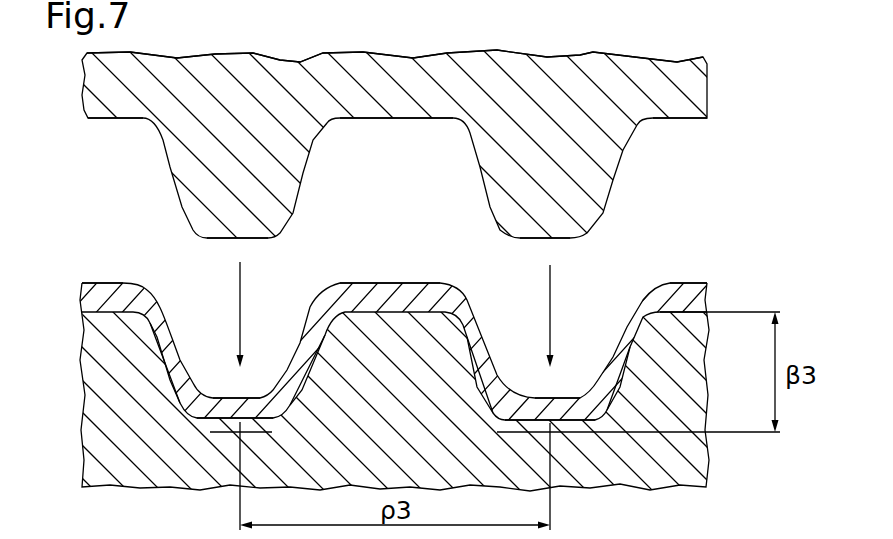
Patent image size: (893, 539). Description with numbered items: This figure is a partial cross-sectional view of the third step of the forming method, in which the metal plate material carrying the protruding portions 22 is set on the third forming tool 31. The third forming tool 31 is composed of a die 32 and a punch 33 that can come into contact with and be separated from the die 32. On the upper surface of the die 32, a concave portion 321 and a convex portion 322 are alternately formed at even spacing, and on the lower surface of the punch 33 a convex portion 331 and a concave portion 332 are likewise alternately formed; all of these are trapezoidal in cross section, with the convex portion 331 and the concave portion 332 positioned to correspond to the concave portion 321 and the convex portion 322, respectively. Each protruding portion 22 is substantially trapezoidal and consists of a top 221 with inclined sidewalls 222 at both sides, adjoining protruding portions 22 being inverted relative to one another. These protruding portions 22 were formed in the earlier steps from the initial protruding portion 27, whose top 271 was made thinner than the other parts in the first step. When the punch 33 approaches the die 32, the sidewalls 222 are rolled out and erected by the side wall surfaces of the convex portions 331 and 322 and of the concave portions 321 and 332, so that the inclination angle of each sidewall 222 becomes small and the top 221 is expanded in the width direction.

The protruding portion 22 is at (443, 364).
The initial protruding portion 27 is at (722, 392).
The top 221 is at (418, 285).
The top of initial protruding portion 271 is at (396, 445).
The sidewall 222 is at (180, 348).
The third forming tool 31 is at (708, 80).
The die 32 is at (699, 328).
The concave portion 321 is at (210, 430).
The convex portion 322 is at (98, 308).
The punch 33 is at (708, 100).
The convex portion 331 is at (263, 240).
The concave portion 332 is at (96, 120).